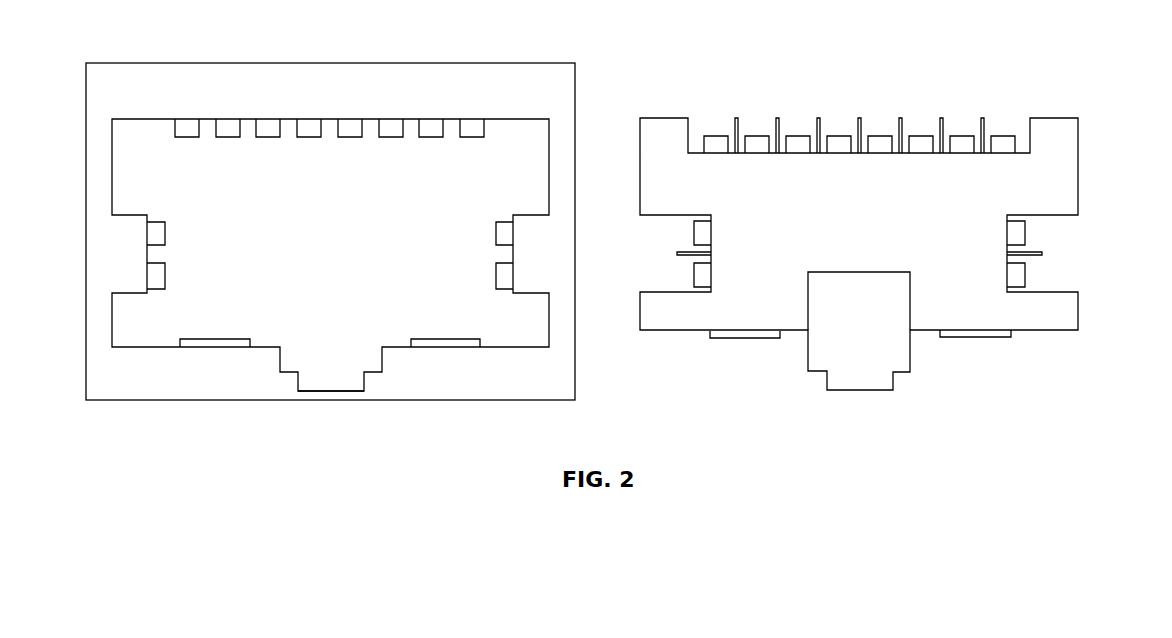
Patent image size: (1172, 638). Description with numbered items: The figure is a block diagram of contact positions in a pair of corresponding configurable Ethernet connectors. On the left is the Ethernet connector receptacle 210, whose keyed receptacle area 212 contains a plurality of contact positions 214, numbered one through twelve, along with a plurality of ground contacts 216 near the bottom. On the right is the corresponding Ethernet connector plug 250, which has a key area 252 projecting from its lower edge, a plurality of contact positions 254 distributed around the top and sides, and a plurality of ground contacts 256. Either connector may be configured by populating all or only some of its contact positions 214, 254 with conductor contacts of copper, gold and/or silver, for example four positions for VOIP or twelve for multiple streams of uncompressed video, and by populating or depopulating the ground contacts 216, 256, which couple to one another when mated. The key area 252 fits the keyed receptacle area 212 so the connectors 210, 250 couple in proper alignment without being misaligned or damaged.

The Ethernet connector receptacle 210 is at (180, 63).
The keyed receptacle area 212 is at (338, 308).
The plurality of contact positions 214 is at (485, 289).
The plurality of ground contacts 216 is at (208, 347).
The Ethernet connector plug 250 is at (1058, 137).
The key area 252 is at (858, 368).
The plurality of contact positions 254 is at (678, 287).
The plurality of ground contacts 256 is at (743, 338).